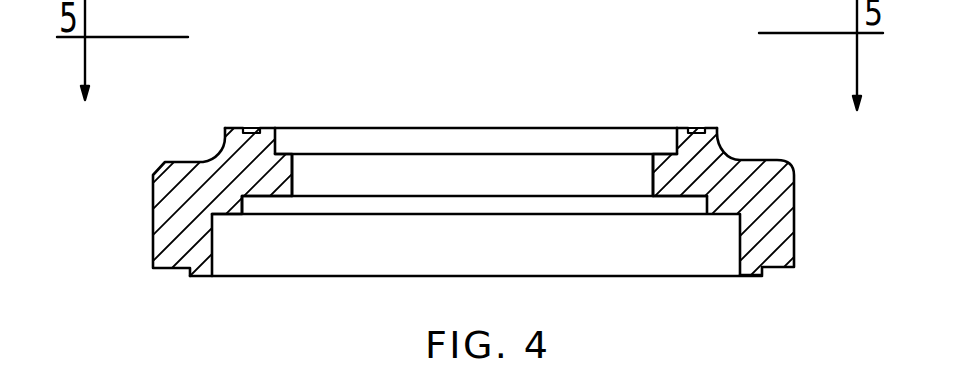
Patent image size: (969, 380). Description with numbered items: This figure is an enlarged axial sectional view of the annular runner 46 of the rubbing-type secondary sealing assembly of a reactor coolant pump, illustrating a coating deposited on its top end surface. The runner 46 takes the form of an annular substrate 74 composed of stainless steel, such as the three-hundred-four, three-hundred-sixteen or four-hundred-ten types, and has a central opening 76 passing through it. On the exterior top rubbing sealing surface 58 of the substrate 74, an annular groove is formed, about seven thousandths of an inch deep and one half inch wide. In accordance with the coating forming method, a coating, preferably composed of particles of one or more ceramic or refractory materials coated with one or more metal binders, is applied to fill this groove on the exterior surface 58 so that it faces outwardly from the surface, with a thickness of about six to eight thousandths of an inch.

The annular runner 46 is at (152, 209).
The exterior top rubbing sealing surface 58 is at (235, 128).
The annular substrate 74 is at (750, 167).
The central opening 76 is at (394, 185).